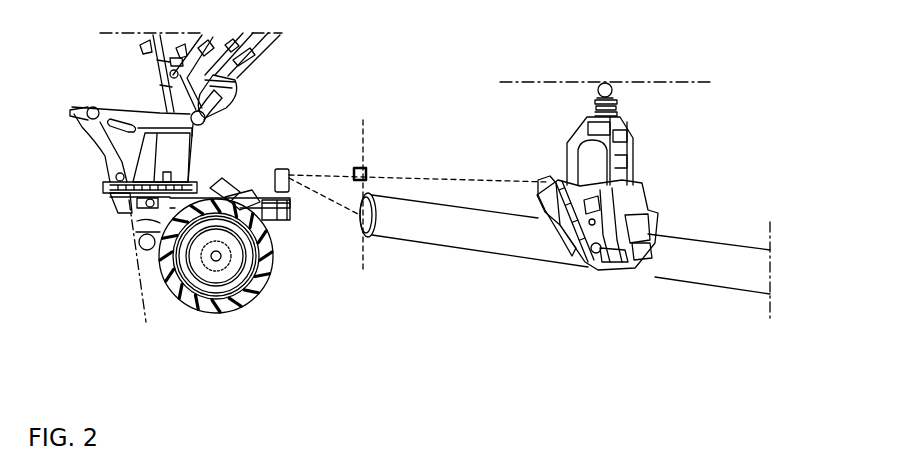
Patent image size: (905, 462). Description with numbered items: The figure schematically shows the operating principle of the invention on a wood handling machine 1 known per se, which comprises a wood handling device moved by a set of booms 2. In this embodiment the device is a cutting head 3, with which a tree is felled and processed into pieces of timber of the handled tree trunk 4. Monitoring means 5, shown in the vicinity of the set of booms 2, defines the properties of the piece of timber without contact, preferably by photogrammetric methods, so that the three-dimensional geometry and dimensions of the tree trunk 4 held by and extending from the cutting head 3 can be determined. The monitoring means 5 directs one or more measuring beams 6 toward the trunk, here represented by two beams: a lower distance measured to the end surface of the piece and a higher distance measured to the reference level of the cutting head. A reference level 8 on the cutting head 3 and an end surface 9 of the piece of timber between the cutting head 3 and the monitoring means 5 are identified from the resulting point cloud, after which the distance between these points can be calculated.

The wood handling machine 1 is at (116, 268).
The set of booms 2 is at (160, 85).
The cutting head 3 is at (640, 196).
The tree trunk 4 is at (532, 238).
The monitoring means 5 is at (274, 174).
The measuring beam 6 is at (337, 160).
The reference level 8 is at (548, 178).
The end surface 9 is at (357, 222).